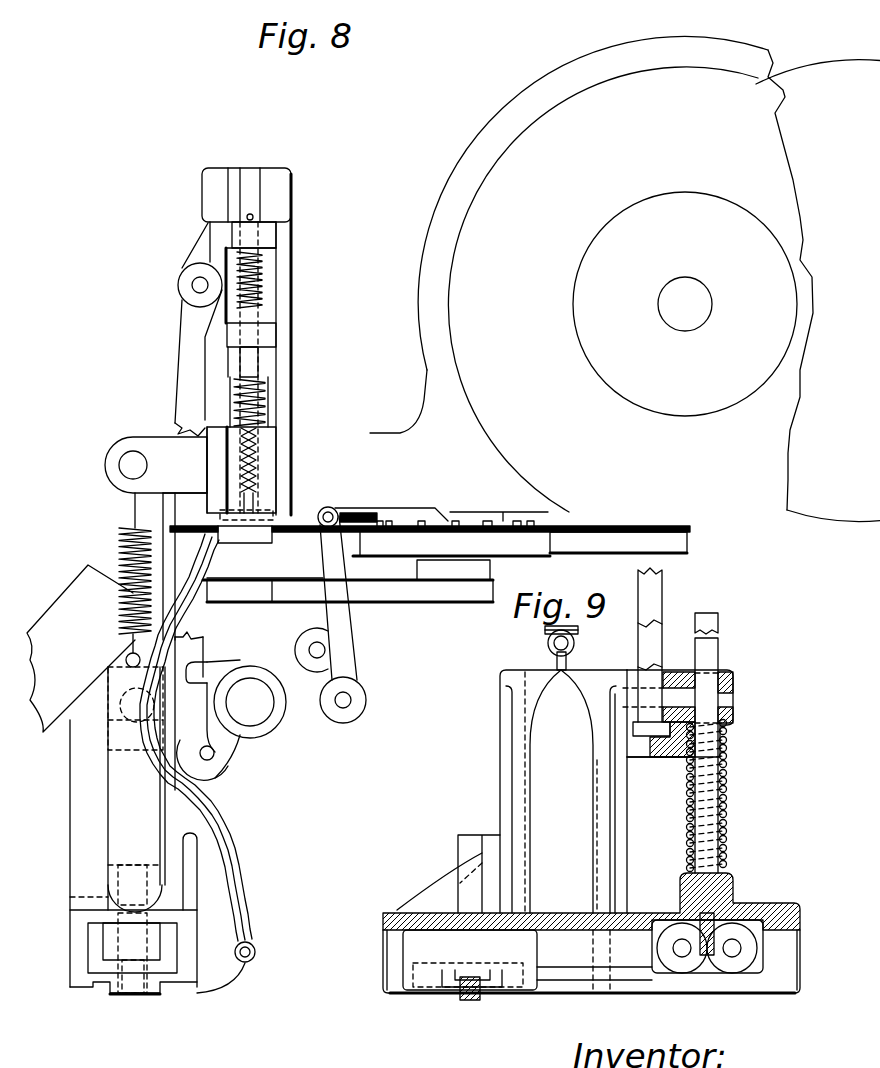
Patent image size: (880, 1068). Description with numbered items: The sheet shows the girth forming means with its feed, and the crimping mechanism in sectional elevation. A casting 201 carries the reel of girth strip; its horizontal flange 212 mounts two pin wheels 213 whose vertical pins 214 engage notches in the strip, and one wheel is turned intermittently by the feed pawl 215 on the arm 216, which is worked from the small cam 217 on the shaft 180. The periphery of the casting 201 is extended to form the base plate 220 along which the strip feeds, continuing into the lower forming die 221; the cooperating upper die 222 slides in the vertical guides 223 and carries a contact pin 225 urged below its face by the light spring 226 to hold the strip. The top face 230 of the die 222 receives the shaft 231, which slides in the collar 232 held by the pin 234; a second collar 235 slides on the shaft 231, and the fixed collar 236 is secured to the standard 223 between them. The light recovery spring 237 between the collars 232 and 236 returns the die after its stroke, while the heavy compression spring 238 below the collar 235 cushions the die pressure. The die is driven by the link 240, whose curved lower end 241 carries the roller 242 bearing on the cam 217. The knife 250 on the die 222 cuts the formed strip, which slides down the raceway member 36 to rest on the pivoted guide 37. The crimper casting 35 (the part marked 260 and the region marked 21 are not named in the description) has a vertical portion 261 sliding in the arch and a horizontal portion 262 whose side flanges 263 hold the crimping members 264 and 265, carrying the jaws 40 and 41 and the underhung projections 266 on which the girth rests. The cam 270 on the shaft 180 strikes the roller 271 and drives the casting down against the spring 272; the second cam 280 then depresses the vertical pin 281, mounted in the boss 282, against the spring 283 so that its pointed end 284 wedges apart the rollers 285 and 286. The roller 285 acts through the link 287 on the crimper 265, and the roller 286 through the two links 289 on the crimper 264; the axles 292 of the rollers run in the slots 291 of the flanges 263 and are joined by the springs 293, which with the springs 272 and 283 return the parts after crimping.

In FIG. 8, the housing 21 is at (373, 455).
In FIG. 9, the crimper casting 35 is at (620, 656).
In FIG. 8, the raceway lower member 36 is at (180, 628).
In FIG. 8, the pivoted guide 37 is at (210, 978).
In FIG. 9, the pivoted guide 37 is at (468, 1000).
In FIG. 8, the crimping jaw 40 is at (142, 972).
In FIG. 9, the crimping jaw 40 is at (430, 993).
In FIG. 9, the crimping jaw 41 is at (502, 993).
In FIG. 8, the shaft 180 is at (258, 707).
In FIG. 8, the casting 201 is at (542, 103).
In FIG. 8, the horizontal flange 212 is at (460, 593).
In FIG. 8, the pin wheels 213 is at (565, 556).
In FIG. 8, the vertical pins 214 is at (487, 520).
In FIG. 8, the feed pawl 215 is at (388, 513).
In FIG. 8, the arm 216 is at (338, 633).
In FIG. 8, the small cam 217 is at (200, 675).
In FIG. 8, the base plate 220 is at (277, 565).
In FIG. 8, the forming die 221 is at (250, 535).
In FIG. 8, the forming die 222 is at (260, 480).
In FIG. 8, the vertical guides 223 is at (283, 240).
In FIG. 8, the contact pin 225 is at (253, 500).
In FIG. 8, the light spring 226 is at (240, 482).
In FIG. 8, the top face 230 is at (250, 440).
In FIG. 8, the shaft 231 is at (260, 462).
In FIG. 8, the collar 232 is at (265, 176).
In FIG. 8, the pin 234 is at (253, 218).
In FIG. 8, the collar 235 is at (262, 362).
In FIG. 8, the fixed collar 236 is at (263, 335).
In FIG. 8, the light recovery spring 237 is at (262, 277).
In FIG. 8, the heavy compression spring 238 is at (265, 393).
In FIG. 8, the link 240 is at (185, 330).
In FIG. 8, the curved lower end 241 is at (195, 738).
In FIG. 8, the roller 242 is at (230, 773).
In FIG. 8, the knife 250 is at (215, 472).
In FIG. 8, the plunger 260 is at (88, 862).
In FIG. 8, the vertical portion 261 is at (85, 795).
In FIG. 9, the horizontal portion 262 is at (395, 910).
In FIG. 8, the side flanges 263 is at (82, 984).
In FIG. 9, the crimping member 264 is at (417, 947).
In FIG. 9, the crimping member 265 is at (513, 960).
In FIG. 9, the under hung projections 266 is at (480, 993).
In FIG. 8, the cam 270 is at (52, 622).
In FIG. 9, the cam 270 is at (655, 612).
In FIG. 8, the roller 271 is at (127, 677).
In FIG. 8, the spring 272 is at (120, 545).
In FIG. 9, the second cam 280 is at (722, 620).
In FIG. 9, the vertical pin 281 is at (708, 660).
In FIG. 9, the boss 282 is at (728, 718).
In FIG. 9, the spring 283 is at (727, 785).
In FIG. 9, the pointed lower end 284 is at (713, 967).
In FIG. 9, the roller 285 is at (683, 962).
In FIG. 9, the roller 286 is at (733, 963).
In FIG. 9, the link 287 is at (657, 962).
In FIG. 8, the links 289 is at (97, 940).
In FIG. 9, the links 289 is at (747, 953).
In FIG. 9, the slots 291 is at (653, 908).
In FIG. 9, the axles 292 is at (700, 920).
In FIG. 9, the springs 293 is at (740, 953).